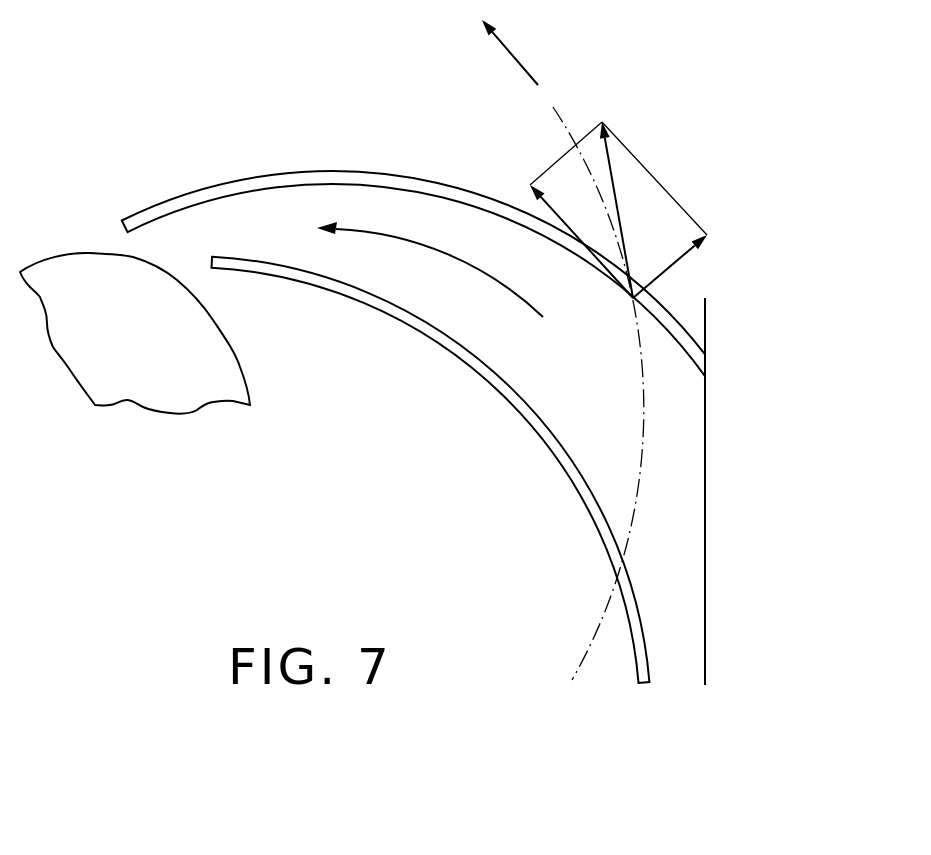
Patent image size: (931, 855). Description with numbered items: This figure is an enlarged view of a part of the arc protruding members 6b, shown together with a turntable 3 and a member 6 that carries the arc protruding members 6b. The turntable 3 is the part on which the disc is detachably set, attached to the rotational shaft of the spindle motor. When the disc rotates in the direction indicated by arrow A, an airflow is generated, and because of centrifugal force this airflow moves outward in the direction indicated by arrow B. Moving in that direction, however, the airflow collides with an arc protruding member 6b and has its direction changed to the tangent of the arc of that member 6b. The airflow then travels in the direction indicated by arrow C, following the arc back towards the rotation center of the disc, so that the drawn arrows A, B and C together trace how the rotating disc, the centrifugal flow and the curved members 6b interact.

The turntable 3 is at (233, 362).
The arc protruding member 6b is at (302, 177).
The diffuser wall 6 is at (708, 491).
The arrow A is at (495, 47).
The arrow B is at (618, 195).
The arrow C is at (517, 293).